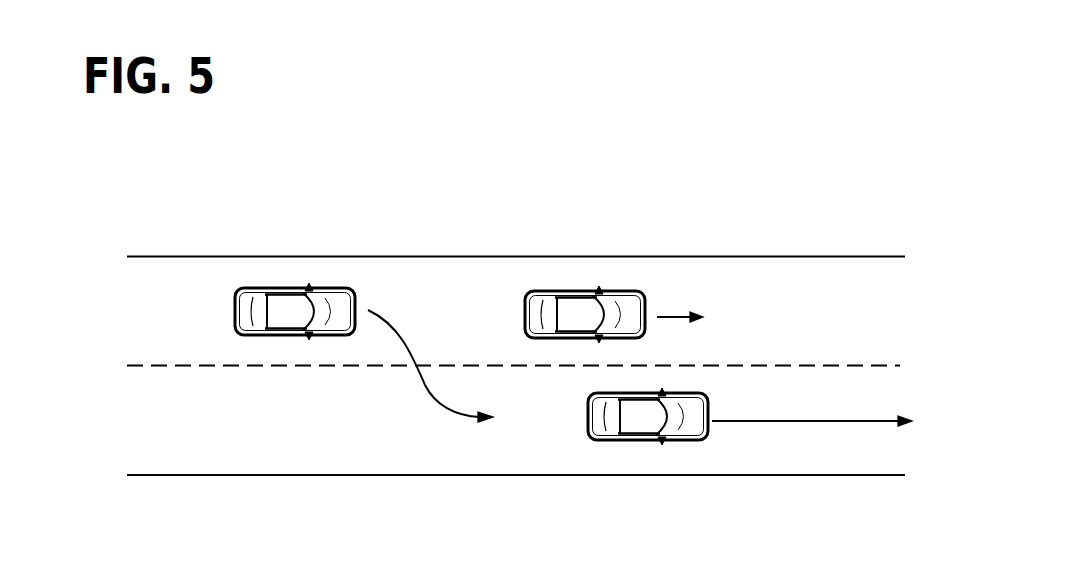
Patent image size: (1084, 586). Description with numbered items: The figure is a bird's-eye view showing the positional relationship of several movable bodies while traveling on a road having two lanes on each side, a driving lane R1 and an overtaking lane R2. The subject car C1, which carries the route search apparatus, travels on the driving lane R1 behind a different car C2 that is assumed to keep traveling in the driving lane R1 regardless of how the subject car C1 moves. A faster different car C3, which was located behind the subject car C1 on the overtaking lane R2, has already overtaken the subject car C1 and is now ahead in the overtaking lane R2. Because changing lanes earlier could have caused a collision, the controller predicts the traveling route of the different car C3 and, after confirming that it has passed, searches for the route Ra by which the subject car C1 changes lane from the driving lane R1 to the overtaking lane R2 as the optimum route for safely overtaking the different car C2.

The driving lane R1 is at (163, 268).
The overtaking lane R2 is at (168, 457).
The subject car C1 is at (282, 308).
The different car C2 is at (572, 310).
The different car C3 is at (635, 418).
The route Ra is at (423, 382).